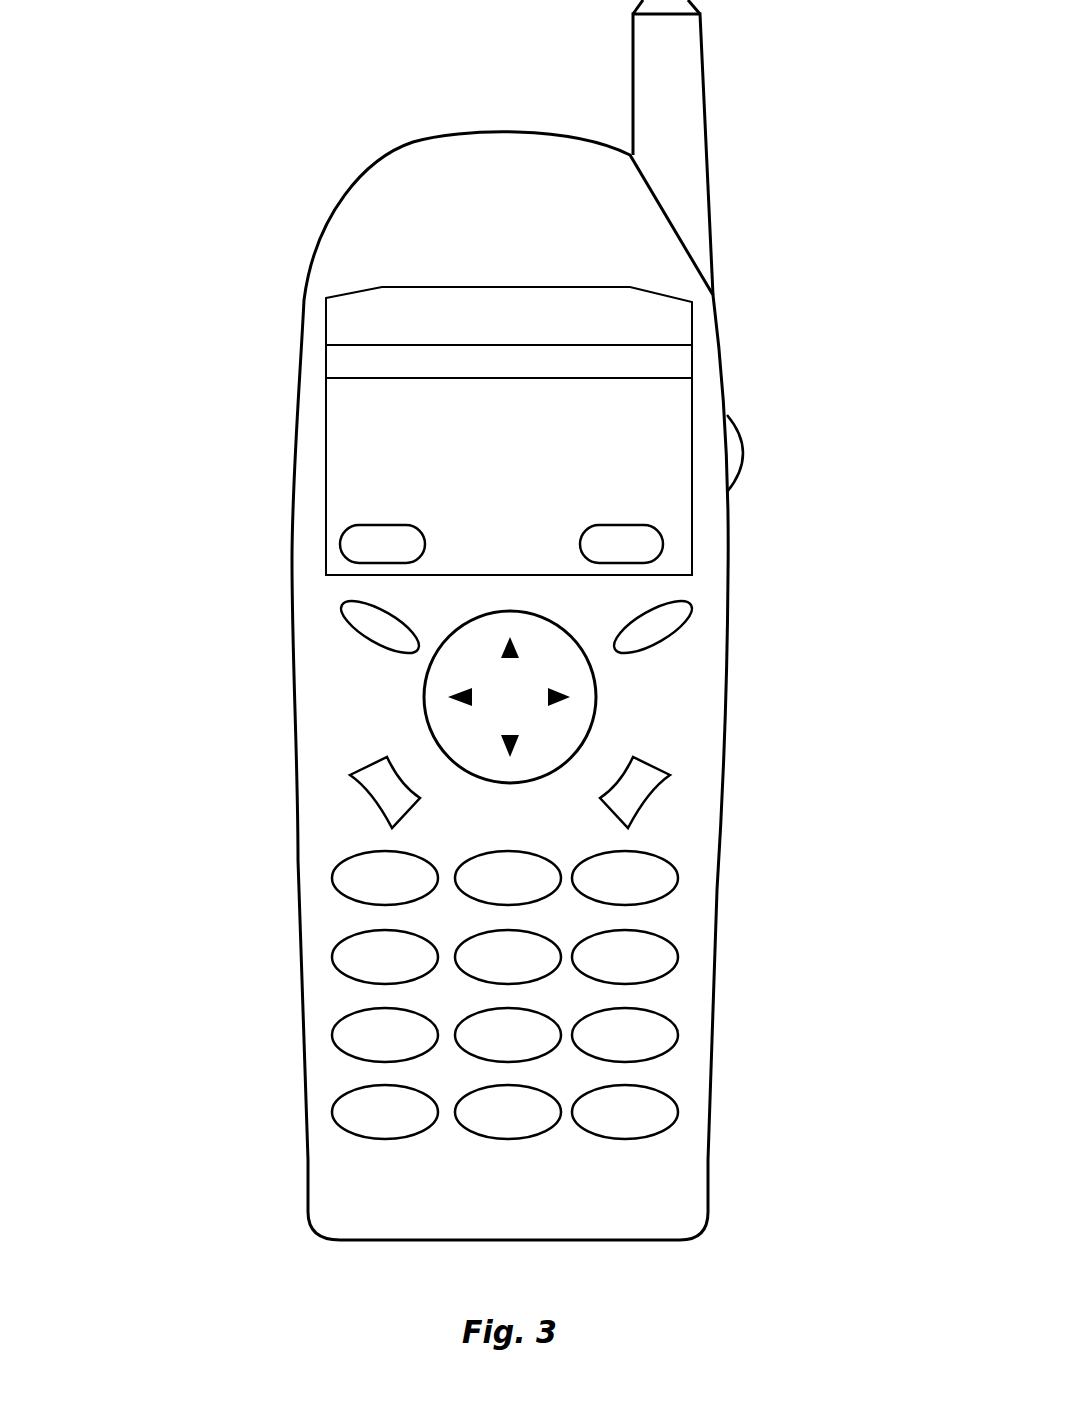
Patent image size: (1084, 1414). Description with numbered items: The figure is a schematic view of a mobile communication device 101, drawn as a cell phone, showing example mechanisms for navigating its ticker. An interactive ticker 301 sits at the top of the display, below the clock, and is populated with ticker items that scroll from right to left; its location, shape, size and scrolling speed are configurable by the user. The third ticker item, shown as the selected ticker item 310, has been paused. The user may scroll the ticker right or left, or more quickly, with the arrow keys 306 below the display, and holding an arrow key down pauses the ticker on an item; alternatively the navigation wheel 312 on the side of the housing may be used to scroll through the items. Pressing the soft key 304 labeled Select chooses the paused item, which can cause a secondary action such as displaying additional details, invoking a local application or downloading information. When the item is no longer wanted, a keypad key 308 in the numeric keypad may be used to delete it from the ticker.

The mobile communication device 101 is at (507, 637).
The interactive ticker 301 is at (506, 328).
The soft key 304 is at (340, 541).
The arrow keys 306 is at (597, 705).
The keypad key 308 is at (680, 876).
The selected ticker item 310 is at (731, 325).
The navigation wheel 312 is at (822, 430).